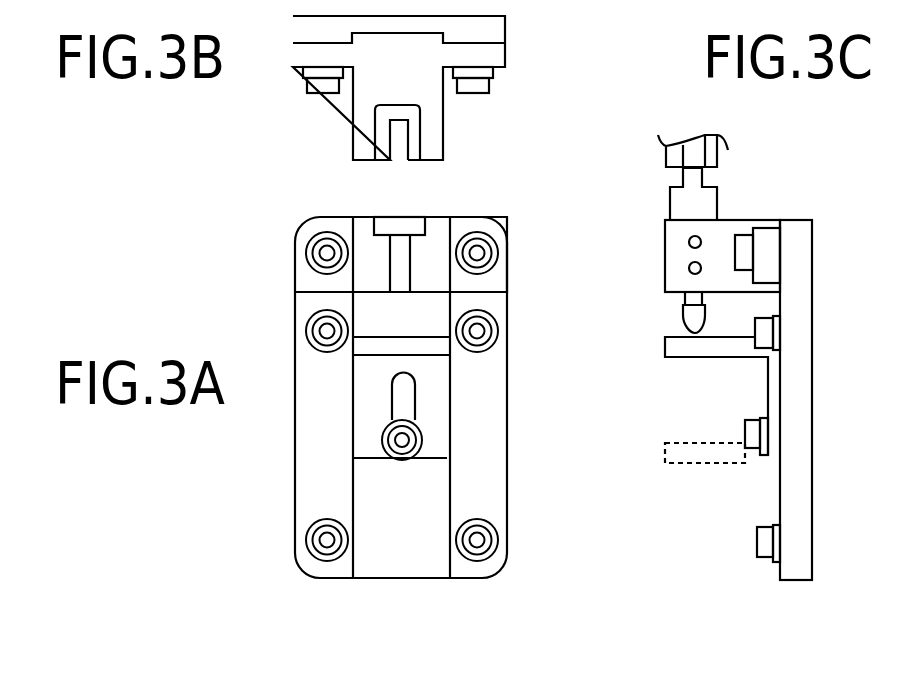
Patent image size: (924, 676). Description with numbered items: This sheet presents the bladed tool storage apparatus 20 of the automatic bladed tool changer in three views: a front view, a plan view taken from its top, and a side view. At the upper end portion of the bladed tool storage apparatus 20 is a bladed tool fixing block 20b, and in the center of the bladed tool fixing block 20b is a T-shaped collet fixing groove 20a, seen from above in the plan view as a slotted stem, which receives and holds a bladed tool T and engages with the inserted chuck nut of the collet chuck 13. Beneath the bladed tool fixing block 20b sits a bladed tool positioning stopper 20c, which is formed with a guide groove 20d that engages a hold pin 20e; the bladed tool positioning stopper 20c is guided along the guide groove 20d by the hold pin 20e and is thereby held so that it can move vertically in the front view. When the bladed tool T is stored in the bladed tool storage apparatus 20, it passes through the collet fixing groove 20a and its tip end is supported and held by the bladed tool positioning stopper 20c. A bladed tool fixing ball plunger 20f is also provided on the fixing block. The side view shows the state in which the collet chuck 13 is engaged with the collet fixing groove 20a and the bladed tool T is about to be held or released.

In FIG. 3C, the collet chuck 13 is at (670, 200).
In FIG. 3A, the bladed tool storage apparatus 20 is at (278, 480).
In FIG. 3B, the collet fixing groove 20a is at (417, 143).
In FIG. 3A, the collet fixing groove 20a is at (415, 216).
In FIG. 3A, the bladed tool fixing block 20b is at (503, 283).
In FIG. 3C, the bladed tool fixing block 20b is at (665, 252).
In FIG. 3A, the bladed tool positioning stopper 20c is at (435, 347).
In FIG. 3C, the bladed tool positioning stopper 20c is at (677, 345).
In FIG. 3A, the guide groove 20d is at (408, 403).
In FIG. 3A, the hold pin 20e is at (392, 458).
In FIG. 3C, the bladed tool fixing ball plunger 20f is at (695, 236).
In FIG. 3C, the bladed tool T is at (695, 315).